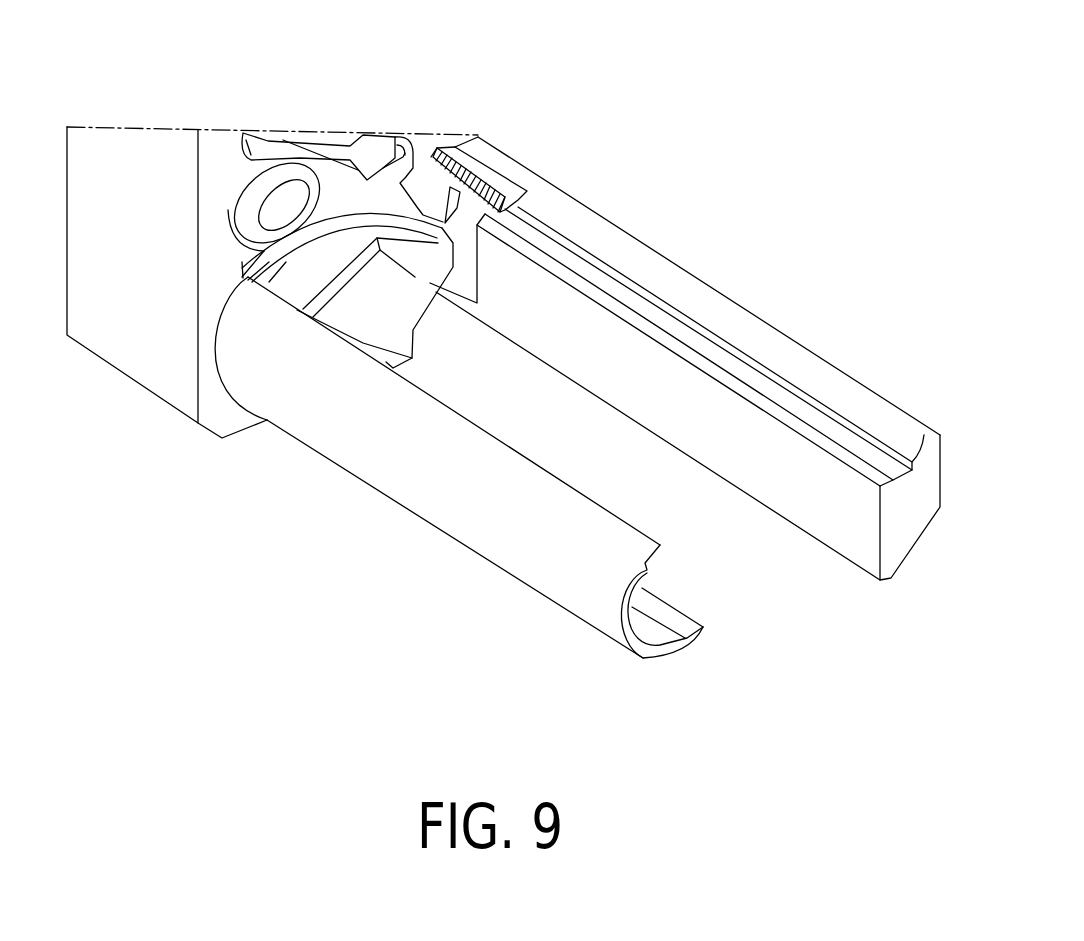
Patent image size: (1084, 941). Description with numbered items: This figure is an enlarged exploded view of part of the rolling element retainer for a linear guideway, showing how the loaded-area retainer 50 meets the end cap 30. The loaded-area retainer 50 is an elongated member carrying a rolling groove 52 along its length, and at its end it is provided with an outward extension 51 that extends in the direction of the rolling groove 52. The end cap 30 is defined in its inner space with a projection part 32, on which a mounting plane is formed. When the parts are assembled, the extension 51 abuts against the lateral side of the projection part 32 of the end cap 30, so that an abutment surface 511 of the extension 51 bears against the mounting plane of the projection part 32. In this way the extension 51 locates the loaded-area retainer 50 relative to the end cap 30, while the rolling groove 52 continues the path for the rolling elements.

The end cap 30 is at (132, 334).
The projection part 32 is at (427, 188).
The loaded-area retainer 50 is at (870, 410).
The extension 51 is at (490, 178).
The abutment surface 511 is at (458, 170).
The rolling groove 52 is at (708, 345).